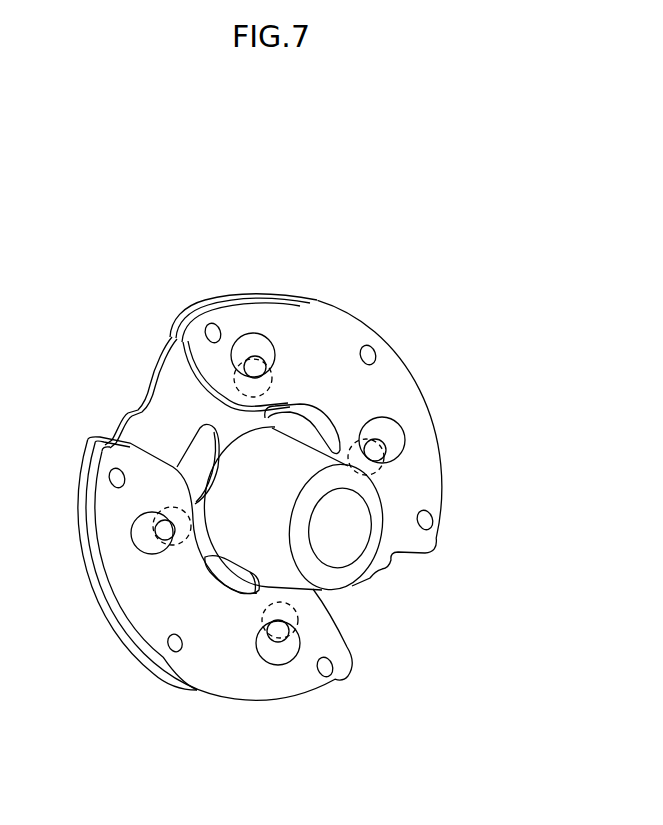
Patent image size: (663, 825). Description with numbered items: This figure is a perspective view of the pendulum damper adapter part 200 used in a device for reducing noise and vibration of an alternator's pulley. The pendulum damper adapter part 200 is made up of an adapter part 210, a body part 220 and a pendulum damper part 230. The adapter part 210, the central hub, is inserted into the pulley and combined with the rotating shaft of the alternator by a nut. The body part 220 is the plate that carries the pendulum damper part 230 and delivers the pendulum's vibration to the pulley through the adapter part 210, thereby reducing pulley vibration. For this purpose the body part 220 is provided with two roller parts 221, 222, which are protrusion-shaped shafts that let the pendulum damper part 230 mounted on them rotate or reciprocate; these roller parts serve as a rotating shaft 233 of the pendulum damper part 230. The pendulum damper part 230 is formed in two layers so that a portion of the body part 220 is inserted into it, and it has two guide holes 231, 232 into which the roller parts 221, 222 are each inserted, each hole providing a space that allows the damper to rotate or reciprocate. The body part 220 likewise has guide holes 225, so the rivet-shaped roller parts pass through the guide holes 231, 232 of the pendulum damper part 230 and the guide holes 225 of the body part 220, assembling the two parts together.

The pendulum damper adapter part 200 is at (355, 262).
The adapter part 210 is at (345, 577).
The body part 220 is at (402, 563).
The roller part 221 is at (255, 365).
The roller part 222 is at (380, 448).
The guide holes 225 is at (193, 527).
The pendulum damper part 230 is at (110, 462).
The guide hole 231 is at (143, 555).
The guide hole 232 is at (288, 665).
The rotating shaft 233 is at (165, 530).